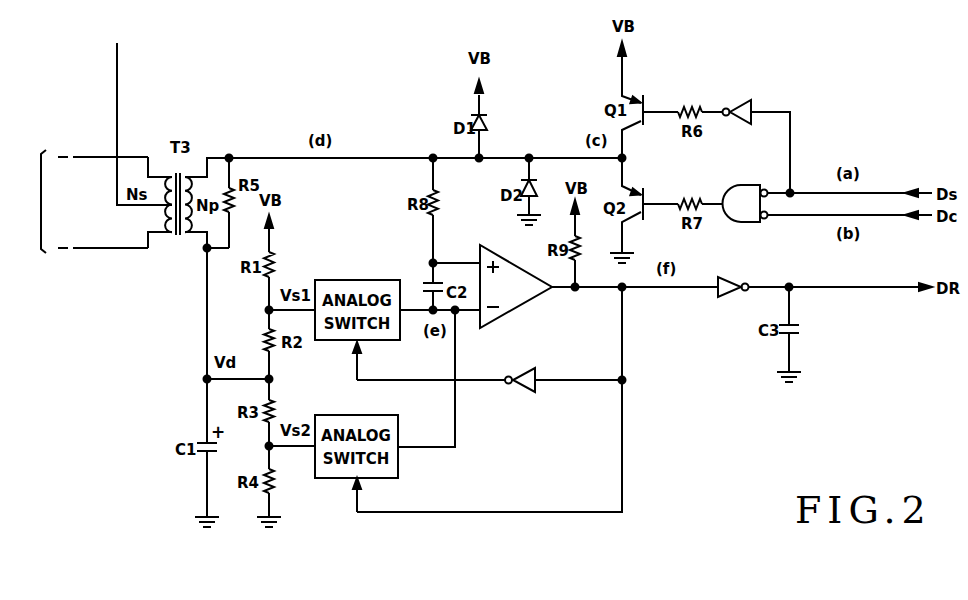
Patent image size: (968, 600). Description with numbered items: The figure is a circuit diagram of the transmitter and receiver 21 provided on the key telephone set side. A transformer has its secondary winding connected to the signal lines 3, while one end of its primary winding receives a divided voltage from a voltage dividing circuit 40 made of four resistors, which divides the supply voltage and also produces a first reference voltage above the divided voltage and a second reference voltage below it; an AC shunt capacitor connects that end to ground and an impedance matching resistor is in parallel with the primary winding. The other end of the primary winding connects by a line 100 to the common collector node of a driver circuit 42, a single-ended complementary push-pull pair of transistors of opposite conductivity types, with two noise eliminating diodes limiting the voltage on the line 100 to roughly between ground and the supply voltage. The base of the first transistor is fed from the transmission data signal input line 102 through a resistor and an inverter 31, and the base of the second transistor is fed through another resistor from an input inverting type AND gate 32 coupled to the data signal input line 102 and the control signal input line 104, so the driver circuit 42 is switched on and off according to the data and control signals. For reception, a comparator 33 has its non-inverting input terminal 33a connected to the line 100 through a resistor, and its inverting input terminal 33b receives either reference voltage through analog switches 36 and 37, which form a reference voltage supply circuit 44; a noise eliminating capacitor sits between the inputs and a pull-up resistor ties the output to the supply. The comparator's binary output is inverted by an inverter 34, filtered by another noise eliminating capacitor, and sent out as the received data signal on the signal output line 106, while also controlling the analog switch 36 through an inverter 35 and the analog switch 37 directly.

The signal lines 3 is at (84, 201).
The transmitter and receiver 21 is at (252, 149).
The inverter 31 is at (745, 99).
The input inverting type AND gate 32 is at (740, 185).
The comparator 33 is at (507, 260).
The non-inverting input terminal 33a is at (456, 243).
The inverting input terminal 33b is at (479, 335).
The inverter 34 is at (731, 279).
The inverter 35 is at (522, 394).
The analog switch 36 is at (370, 280).
The analog switch 37 is at (392, 415).
The voltage dividing circuit 40 is at (242, 447).
The driver circuit 42 is at (632, 93).
The reference voltage supply circuit 44 is at (435, 420).
The line 100 is at (544, 153).
The transmission data signal input line 102 is at (886, 192).
The control signal input line 104 is at (891, 222).
The signal output line 106 is at (890, 289).